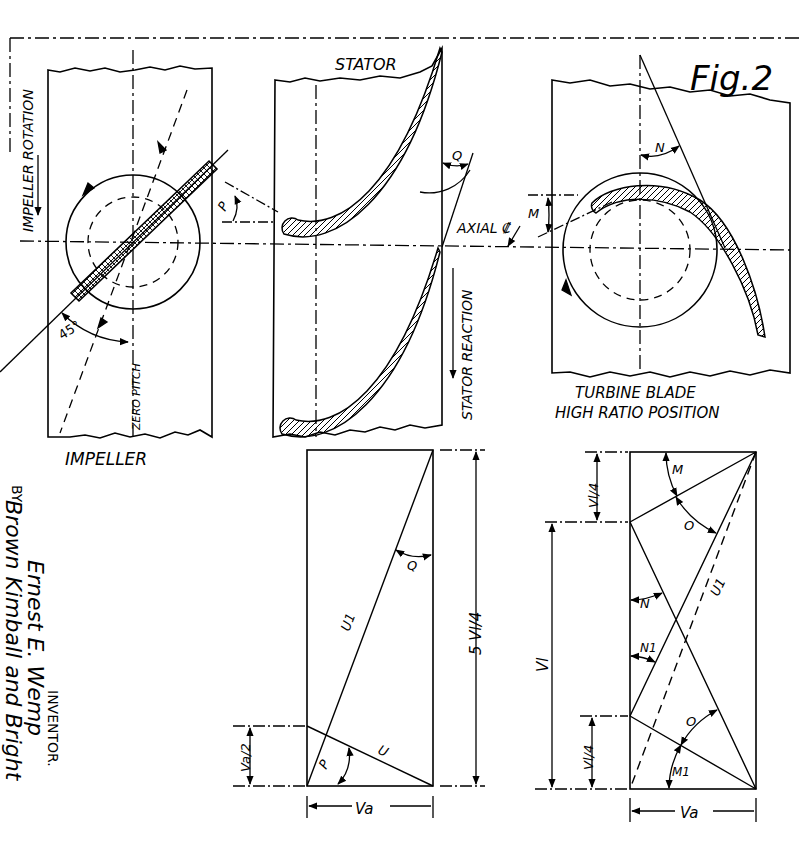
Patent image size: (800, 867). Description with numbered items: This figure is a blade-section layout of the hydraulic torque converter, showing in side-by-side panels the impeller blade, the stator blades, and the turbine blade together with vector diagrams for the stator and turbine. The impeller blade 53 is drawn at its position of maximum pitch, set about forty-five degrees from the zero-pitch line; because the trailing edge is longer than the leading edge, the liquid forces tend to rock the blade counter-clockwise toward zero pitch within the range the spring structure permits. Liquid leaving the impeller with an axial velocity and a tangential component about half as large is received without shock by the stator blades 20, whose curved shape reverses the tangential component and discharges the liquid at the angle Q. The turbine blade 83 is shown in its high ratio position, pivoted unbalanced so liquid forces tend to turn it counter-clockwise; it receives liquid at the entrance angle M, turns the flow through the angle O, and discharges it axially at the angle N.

The impeller blade 53 is at (70, 261).
The stator blade 20 is at (386, 167).
The turbine blade 83 is at (690, 206).